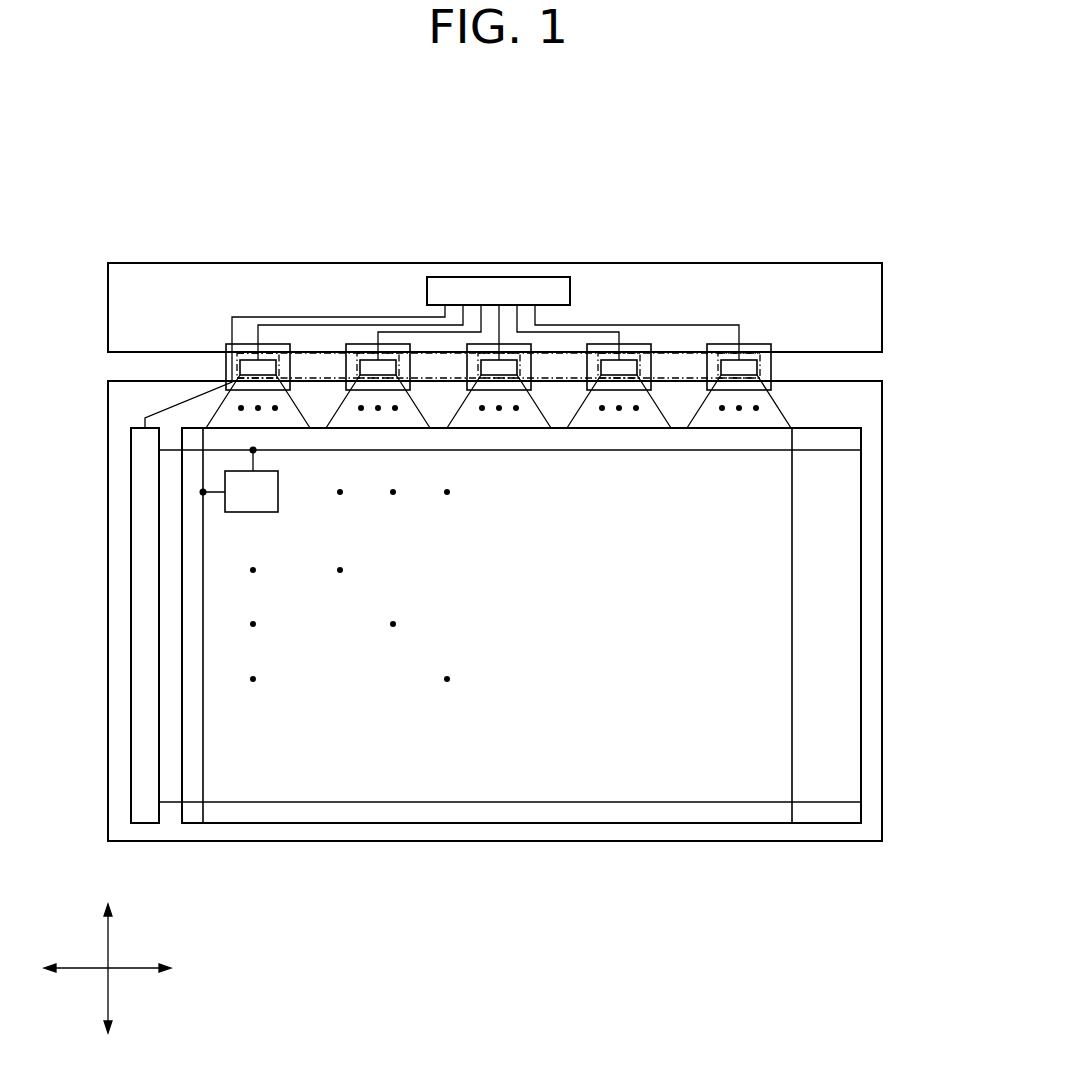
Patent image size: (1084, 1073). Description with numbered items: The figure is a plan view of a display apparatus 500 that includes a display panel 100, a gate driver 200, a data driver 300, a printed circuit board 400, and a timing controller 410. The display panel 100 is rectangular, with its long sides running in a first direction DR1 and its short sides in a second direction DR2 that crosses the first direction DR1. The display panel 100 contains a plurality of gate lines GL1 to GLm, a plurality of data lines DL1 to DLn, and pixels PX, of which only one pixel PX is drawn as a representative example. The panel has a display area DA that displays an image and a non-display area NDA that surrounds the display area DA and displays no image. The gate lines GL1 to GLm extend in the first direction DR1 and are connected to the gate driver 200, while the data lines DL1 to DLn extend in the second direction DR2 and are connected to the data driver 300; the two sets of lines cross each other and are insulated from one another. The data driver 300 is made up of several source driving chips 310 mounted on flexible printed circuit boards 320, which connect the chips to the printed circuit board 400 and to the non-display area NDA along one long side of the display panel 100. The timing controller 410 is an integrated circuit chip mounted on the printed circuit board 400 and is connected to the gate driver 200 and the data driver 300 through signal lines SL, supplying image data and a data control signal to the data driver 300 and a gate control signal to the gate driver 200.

The display apparatus 500 is at (817, 161).
The printed circuit board 400 is at (828, 263).
The timing controller 410 is at (498, 292).
The data driver 300 is at (760, 365).
The source driving chip 310 is at (722, 358).
The flexible printed circuit board 320 is at (755, 352).
The display panel 100 is at (882, 403).
The gate driver 200 is at (142, 623).
The signal line SL is at (337, 317).
The gate line GL1 is at (598, 450).
The gate line GLm is at (597, 802).
The data line DL1 is at (203, 737).
The data line DLn is at (792, 732).
The pixel PX is at (239, 480).
The display area DA is at (836, 612).
The non-display area NDA is at (868, 547).
The first direction DR1 is at (128, 968).
The second direction DR2 is at (108, 957).